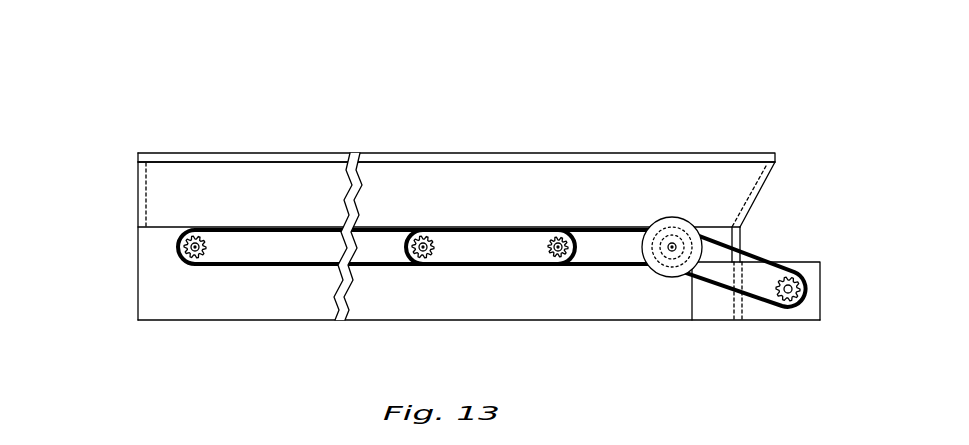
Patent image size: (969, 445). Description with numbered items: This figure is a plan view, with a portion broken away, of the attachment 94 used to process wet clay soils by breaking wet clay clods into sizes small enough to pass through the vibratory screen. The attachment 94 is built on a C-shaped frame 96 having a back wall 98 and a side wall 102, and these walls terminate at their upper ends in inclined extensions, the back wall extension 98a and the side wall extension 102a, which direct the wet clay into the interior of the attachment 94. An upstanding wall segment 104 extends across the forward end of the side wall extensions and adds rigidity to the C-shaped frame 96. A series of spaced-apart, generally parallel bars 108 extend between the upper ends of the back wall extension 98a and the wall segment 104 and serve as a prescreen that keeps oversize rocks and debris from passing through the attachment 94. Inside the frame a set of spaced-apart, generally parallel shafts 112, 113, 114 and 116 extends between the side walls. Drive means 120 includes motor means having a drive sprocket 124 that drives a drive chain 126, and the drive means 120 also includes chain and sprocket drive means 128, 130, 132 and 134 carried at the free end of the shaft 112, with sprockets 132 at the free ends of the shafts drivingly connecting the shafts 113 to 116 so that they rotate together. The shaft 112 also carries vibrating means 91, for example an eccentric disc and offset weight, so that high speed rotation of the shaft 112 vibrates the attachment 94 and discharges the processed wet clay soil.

The vibrating means 91 is at (658, 213).
The attachment 94 is at (782, 152).
The C-shaped frame 96 is at (136, 312).
The back wall 98 is at (742, 242).
The back wall extension 98a is at (768, 184).
The side wall 102 is at (152, 263).
The side wall extension 102a is at (165, 175).
The upstanding wall segment 104 is at (137, 200).
The bars 108 is at (528, 153).
The shaft 112 is at (673, 244).
The shaft 113 is at (557, 252).
The shaft 114 is at (424, 252).
The shaft 116 is at (196, 244).
The drive means 120 is at (768, 325).
The drive sprocket 124 is at (796, 293).
The drive chain 126 is at (757, 257).
The chain and sprocket drive means 128 is at (590, 270).
The chain and sprocket drive means 130 is at (480, 268).
The sprocket 132 is at (368, 270).
The chain and sprocket drive means 134 is at (232, 269).